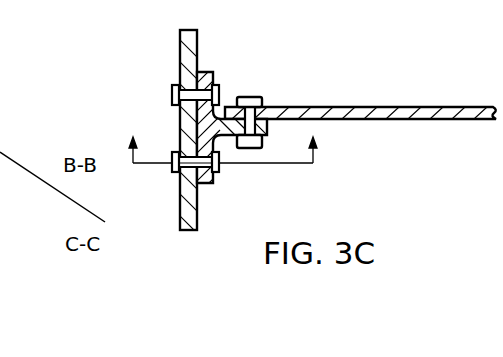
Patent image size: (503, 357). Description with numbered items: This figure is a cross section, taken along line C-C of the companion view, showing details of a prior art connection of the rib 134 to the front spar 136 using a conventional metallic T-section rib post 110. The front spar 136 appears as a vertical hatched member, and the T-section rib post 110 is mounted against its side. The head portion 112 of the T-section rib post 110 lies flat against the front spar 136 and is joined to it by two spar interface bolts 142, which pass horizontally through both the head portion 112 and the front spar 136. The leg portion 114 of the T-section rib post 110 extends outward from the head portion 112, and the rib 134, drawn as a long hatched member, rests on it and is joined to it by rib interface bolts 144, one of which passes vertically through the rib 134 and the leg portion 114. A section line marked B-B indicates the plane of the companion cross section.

The T-section rib post 110 is at (206, 117).
The head portion 112 is at (215, 172).
The leg portion 114 is at (353, 89).
The rib 134 is at (426, 106).
The front spar 136 is at (180, 53).
The spar interface bolts 142 is at (172, 90).
The rib interface bolts 144 is at (290, 74).